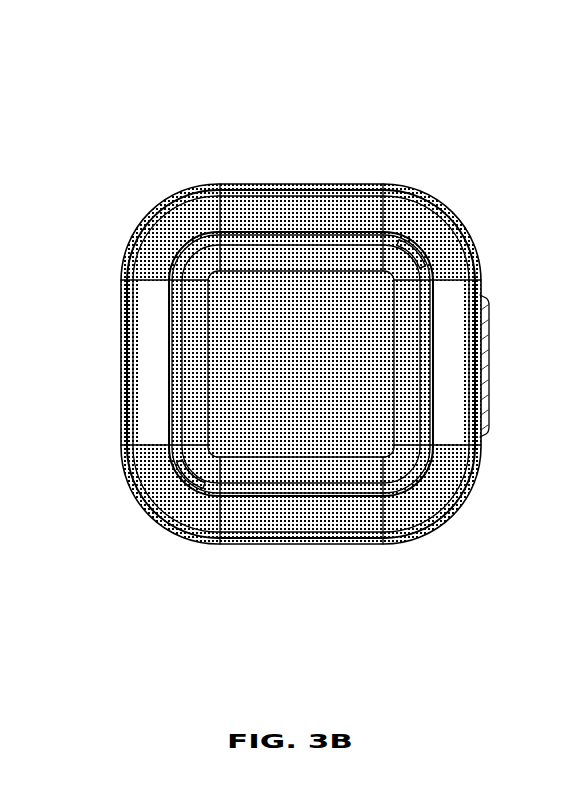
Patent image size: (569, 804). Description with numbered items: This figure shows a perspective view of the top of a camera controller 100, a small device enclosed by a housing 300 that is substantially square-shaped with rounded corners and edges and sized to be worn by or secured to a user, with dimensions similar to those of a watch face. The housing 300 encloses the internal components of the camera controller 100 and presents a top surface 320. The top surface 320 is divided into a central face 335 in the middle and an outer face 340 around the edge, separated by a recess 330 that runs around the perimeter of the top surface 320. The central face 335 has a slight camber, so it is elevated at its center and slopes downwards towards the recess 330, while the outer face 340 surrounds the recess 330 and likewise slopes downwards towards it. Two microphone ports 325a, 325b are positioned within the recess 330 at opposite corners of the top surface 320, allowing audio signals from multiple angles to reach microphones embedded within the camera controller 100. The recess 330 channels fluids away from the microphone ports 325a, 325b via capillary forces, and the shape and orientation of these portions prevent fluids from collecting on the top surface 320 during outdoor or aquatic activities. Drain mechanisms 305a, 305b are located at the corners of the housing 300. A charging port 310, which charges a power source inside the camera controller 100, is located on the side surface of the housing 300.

The camera controller 100 is at (142, 49).
The housing 300 is at (231, 181).
The outer face 340 is at (258, 205).
The recess 330 is at (313, 237).
The drain mechanism 305a is at (411, 222).
The drain mechanism 305b is at (160, 462).
The microphone port 325a is at (412, 256).
The microphone port 325b is at (190, 478).
The charging port 310 is at (485, 352).
The top surface 320 is at (374, 411).
The central face 335 is at (300, 383).